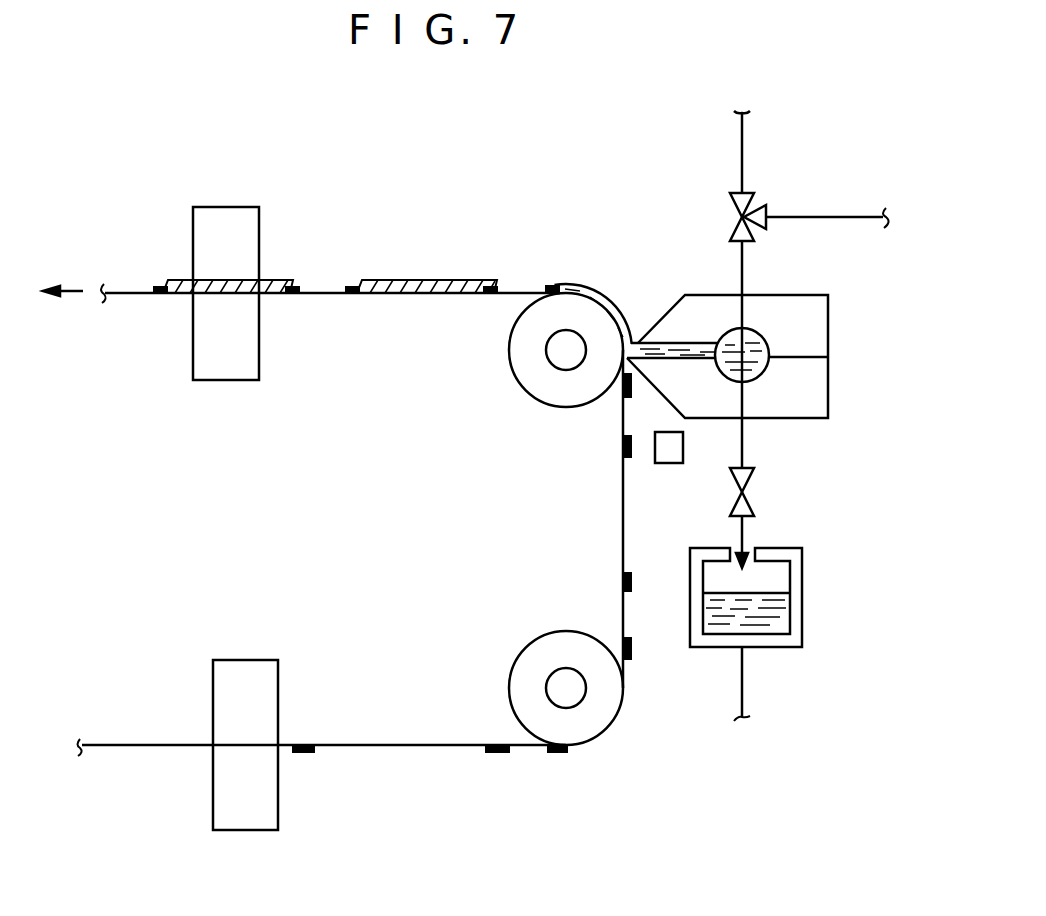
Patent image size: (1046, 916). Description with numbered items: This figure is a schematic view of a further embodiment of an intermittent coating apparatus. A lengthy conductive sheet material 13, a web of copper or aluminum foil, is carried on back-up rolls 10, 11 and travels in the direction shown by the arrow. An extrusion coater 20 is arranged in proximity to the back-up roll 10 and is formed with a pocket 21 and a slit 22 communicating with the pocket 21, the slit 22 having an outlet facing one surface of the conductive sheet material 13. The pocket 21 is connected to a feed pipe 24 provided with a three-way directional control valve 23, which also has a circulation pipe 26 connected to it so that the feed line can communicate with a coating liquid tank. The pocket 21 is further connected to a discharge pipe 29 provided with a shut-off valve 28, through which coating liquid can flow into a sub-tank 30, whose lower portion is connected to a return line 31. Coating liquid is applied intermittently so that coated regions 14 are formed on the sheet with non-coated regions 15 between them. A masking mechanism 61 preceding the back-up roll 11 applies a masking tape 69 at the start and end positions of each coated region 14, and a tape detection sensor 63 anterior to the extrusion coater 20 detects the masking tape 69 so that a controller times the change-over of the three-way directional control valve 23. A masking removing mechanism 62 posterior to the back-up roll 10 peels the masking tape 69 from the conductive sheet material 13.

The back-up roll 10 is at (526, 370).
The back-up roll 11 is at (512, 684).
The conductive sheet material 13 is at (133, 293).
The coated region 14 is at (365, 266).
The non-coated region 15 is at (357, 266).
The extrusion coater 20 is at (836, 379).
The pocket 21 is at (768, 350).
The slit 22 is at (678, 342).
The three-way directional control valve 23 is at (738, 226).
The feed pipe 24 is at (833, 217).
The circulation pipe 26 is at (745, 148).
The shut-off valve 28 is at (752, 478).
The discharge pipe 29 is at (742, 442).
The sub-tank 30 is at (805, 605).
The return line 31 is at (742, 680).
The masking mechanism 61 is at (250, 660).
The masking removing mechanism 62 is at (240, 207).
The tape detection sensor 63 is at (670, 463).
The masking tape 69 is at (343, 296).